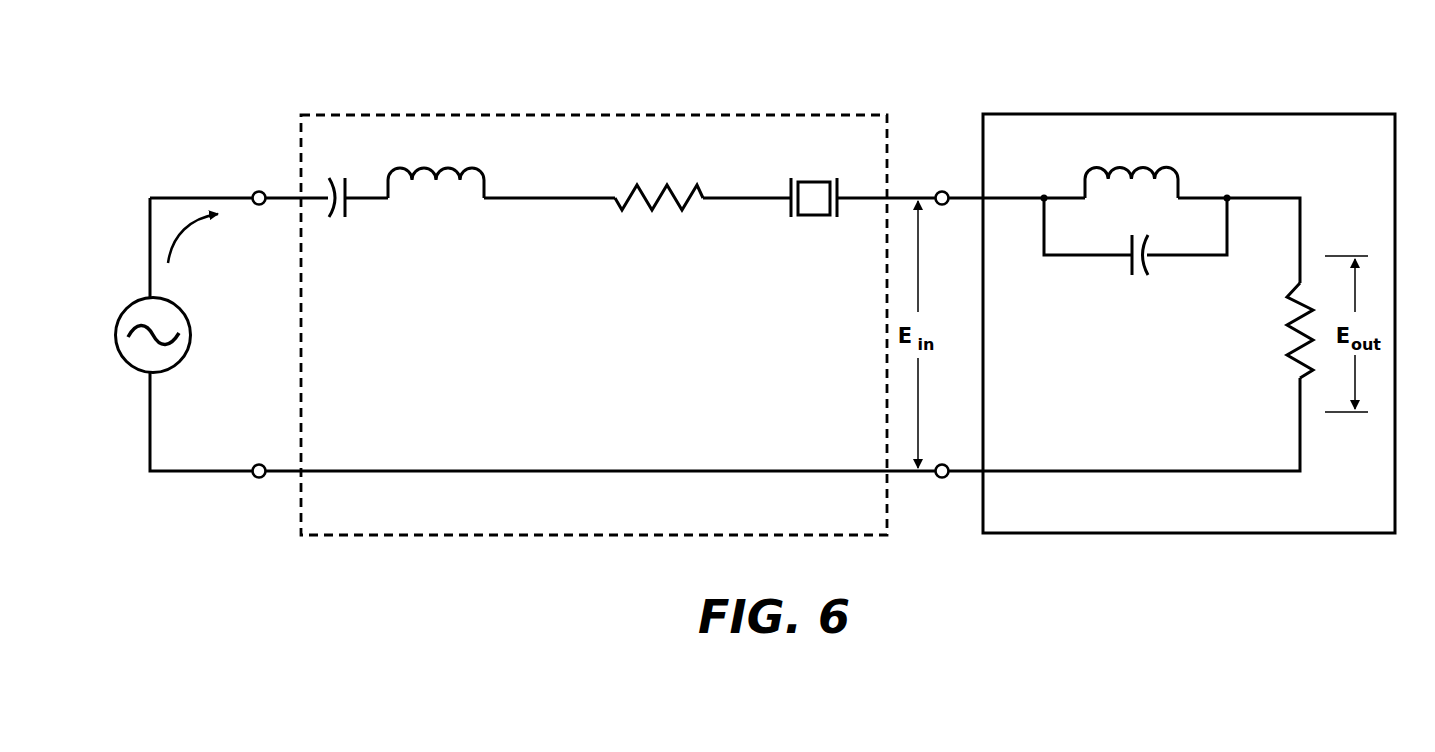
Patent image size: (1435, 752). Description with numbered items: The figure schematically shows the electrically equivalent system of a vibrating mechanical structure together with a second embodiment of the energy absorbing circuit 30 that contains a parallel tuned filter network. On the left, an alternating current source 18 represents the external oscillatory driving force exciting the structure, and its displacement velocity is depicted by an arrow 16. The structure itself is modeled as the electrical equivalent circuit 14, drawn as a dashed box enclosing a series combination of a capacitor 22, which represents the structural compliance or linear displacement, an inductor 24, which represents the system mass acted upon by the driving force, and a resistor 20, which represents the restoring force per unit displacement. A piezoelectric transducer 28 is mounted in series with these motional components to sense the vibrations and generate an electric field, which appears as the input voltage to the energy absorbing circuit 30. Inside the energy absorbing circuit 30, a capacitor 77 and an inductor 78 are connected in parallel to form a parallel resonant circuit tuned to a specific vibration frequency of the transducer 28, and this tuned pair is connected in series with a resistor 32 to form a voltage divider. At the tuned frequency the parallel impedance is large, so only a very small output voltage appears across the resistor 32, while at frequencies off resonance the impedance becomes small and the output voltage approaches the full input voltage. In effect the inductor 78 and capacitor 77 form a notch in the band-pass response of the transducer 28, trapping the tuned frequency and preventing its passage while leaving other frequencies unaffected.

The electrical equivalent circuit 14 is at (591, 110).
The arrow 16 is at (183, 240).
The alternating current source 18 is at (115, 333).
The resistor 20 is at (662, 200).
The capacitor 22 is at (347, 217).
The inductor 24 is at (436, 180).
The piezoelectric transducer 28 is at (817, 217).
The energy absorbing circuit 30 is at (1067, 110).
The resistor 32 is at (1290, 355).
The capacitor 77 is at (1147, 238).
The inductor 78 is at (1161, 166).